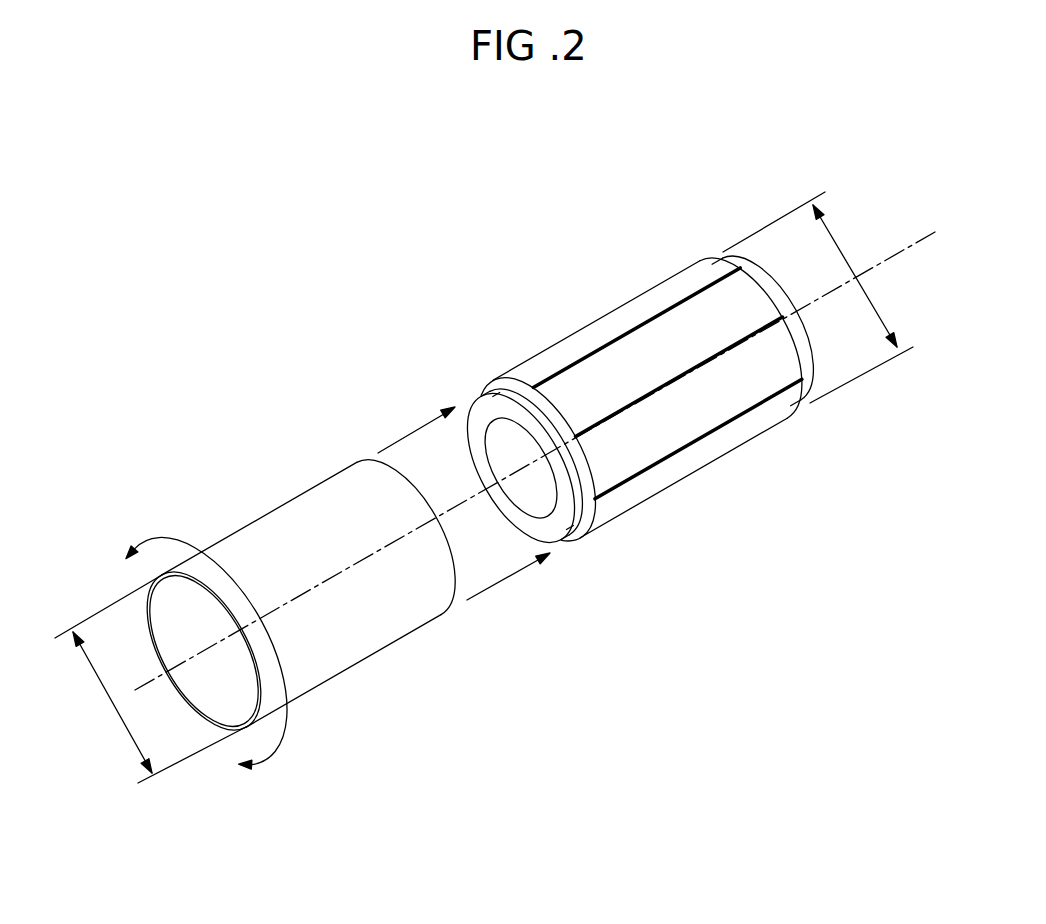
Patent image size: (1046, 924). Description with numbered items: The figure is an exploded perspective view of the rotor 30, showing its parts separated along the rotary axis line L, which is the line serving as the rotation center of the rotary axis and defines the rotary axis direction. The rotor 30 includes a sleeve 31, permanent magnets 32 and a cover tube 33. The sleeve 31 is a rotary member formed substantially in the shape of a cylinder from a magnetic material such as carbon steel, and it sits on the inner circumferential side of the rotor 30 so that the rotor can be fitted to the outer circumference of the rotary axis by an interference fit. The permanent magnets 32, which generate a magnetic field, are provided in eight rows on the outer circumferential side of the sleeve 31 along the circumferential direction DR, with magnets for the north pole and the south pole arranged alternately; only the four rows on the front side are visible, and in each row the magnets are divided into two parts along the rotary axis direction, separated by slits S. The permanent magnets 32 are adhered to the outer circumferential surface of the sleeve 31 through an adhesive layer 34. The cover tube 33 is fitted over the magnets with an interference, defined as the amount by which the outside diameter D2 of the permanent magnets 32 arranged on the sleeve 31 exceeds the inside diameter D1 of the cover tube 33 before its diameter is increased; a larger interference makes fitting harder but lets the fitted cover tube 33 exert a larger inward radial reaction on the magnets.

The rotor 30 is at (683, 376).
The sleeve 31 is at (818, 382).
The permanent magnets 32 is at (701, 448).
The cover tube 33 is at (331, 647).
The adhesive layer 34 is at (572, 528).
The slit S is at (580, 630).
The rotary axis line L is at (913, 213).
The inside diameter of the cover tube D1 is at (150, 679).
The outside diameter of the permanent magnets D2 is at (818, 297).
The circumferential direction DR is at (222, 570).